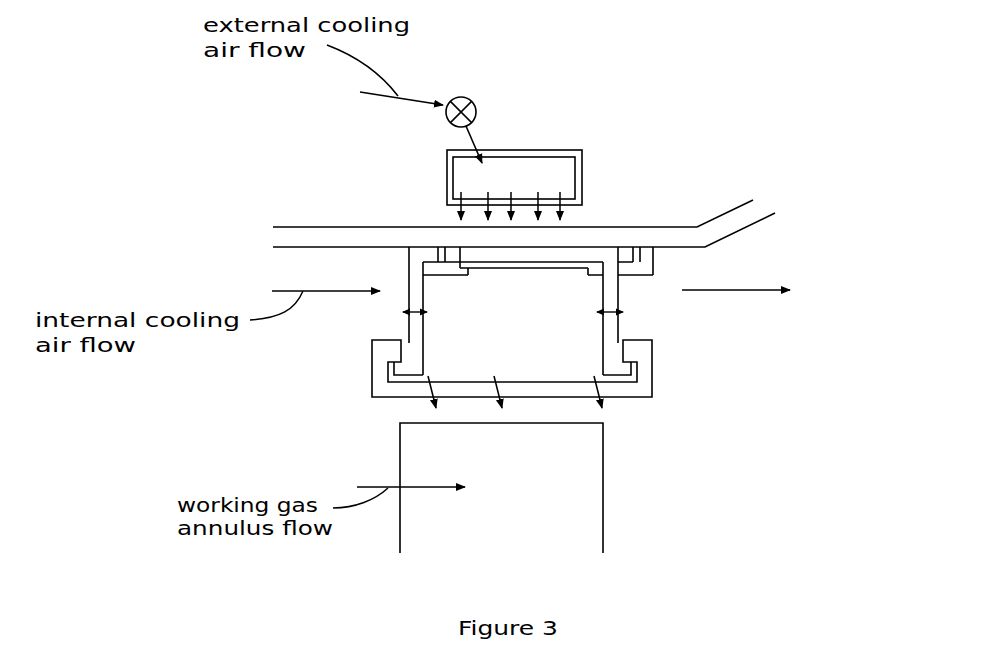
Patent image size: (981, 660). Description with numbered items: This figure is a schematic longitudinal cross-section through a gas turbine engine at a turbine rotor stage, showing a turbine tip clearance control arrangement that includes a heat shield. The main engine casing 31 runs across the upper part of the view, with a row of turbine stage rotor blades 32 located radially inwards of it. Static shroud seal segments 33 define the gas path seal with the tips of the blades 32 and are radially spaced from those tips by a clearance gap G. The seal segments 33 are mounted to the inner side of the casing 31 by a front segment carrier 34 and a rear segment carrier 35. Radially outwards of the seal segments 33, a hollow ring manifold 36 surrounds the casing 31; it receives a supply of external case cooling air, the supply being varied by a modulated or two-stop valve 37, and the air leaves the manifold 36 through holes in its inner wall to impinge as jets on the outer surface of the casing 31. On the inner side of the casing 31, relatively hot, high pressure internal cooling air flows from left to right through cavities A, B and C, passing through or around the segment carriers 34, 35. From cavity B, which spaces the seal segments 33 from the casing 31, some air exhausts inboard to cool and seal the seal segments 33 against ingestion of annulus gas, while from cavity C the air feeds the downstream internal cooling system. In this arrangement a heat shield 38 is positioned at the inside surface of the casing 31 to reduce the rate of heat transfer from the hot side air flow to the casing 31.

The main engine casing 31 is at (361, 236).
The turbine stage rotor blades 32 is at (521, 521).
The static shroud seal segments 33 is at (612, 388).
The front segment carrier 34 is at (415, 341).
The rear segment carrier 35 is at (608, 342).
The hollow ring manifold 36 is at (580, 160).
The modulated or two-stop valve 37 is at (461, 97).
The heat shield 38 is at (572, 265).
The cavity A is at (320, 331).
The cavity B is at (518, 327).
The cavity C is at (741, 329).
The clearance gap G is at (410, 408).